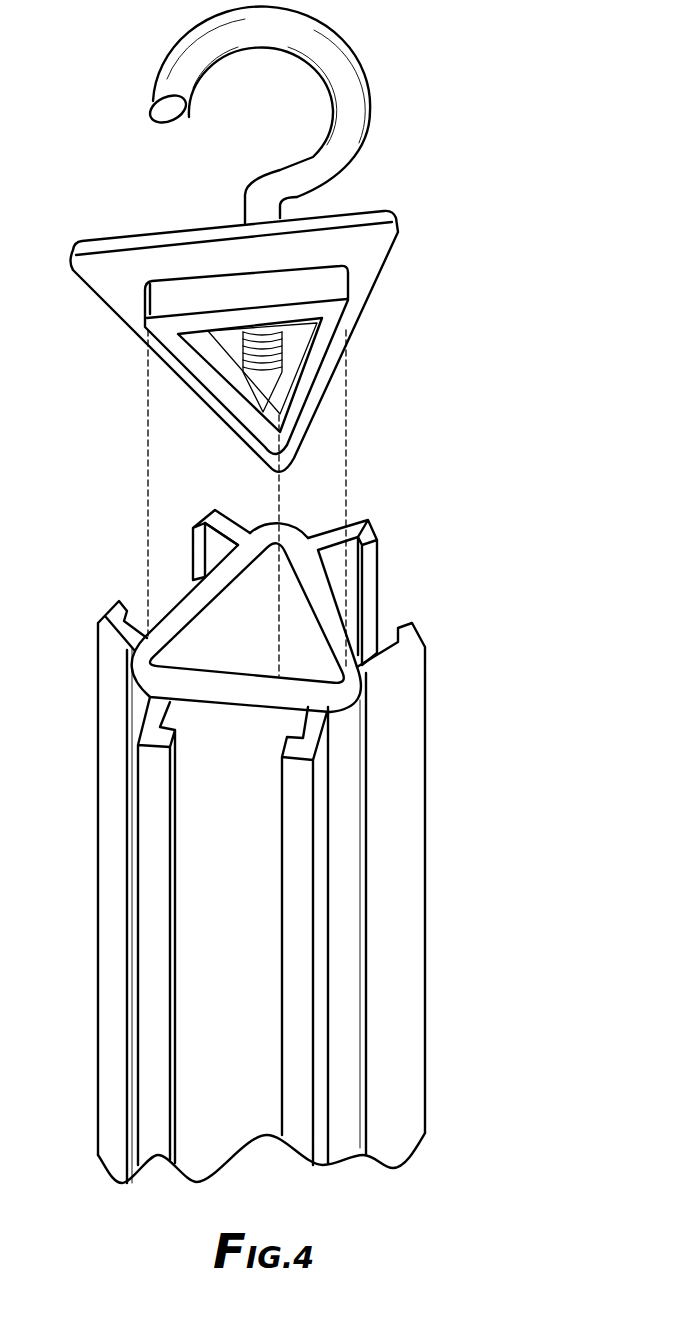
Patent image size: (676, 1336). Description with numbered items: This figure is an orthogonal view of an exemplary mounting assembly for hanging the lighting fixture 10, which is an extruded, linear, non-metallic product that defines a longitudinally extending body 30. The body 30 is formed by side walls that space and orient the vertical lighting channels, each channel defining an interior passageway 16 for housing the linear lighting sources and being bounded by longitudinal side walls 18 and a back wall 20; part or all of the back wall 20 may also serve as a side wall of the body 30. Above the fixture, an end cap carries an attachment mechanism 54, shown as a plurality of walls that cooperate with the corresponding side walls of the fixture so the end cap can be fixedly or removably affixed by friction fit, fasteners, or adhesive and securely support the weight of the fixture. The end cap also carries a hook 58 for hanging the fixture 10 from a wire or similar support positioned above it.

The lighting fixture 10 is at (324, 846).
The interior passageway 16 is at (397, 590).
The longitudinal side walls 18 is at (410, 908).
The back wall 20 is at (253, 997).
The body 30 is at (348, 752).
The attachment mechanism 54 is at (330, 281).
The hook 58 is at (338, 40).